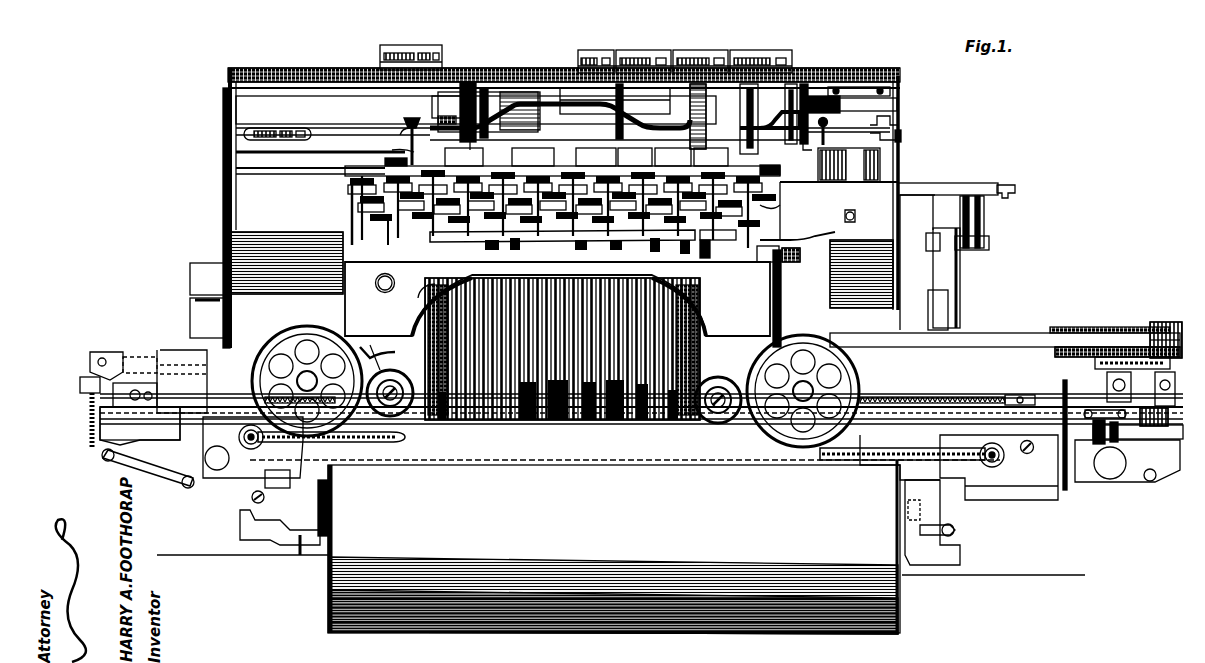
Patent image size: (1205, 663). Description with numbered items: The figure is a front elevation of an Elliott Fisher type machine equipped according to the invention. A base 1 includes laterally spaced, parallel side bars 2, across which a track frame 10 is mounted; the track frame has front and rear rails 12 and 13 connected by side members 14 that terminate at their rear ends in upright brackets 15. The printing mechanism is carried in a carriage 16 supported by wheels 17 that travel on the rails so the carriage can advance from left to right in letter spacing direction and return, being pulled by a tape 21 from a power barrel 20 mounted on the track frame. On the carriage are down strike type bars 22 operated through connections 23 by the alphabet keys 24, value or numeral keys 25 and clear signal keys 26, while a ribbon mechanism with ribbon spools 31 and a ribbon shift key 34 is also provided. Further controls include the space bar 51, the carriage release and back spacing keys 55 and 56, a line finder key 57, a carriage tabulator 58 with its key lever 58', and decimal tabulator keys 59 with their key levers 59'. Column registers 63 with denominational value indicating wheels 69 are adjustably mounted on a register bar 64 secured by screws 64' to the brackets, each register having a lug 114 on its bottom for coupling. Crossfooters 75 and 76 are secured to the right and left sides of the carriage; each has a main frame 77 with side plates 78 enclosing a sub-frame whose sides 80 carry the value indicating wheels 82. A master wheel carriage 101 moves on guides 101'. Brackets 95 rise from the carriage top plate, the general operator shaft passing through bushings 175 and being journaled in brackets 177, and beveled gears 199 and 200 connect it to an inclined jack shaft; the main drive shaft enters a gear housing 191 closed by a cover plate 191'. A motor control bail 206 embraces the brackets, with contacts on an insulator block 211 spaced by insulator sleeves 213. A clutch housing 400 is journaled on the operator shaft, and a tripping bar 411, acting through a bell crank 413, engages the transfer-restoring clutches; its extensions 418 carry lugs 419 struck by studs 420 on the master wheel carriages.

The base 1 is at (910, 578).
The side bars 2 is at (320, 544).
The track frame 10 is at (1049, 498).
The front rail 12 is at (695, 400).
The rear rail 13 is at (966, 402).
The side members 14 is at (196, 478).
The upright brackets 15 is at (962, 276).
The carriage 16 is at (422, 292).
The front and rear wheels 17 is at (373, 344).
The power barrel 20 is at (1084, 336).
The tape 21 is at (1006, 336).
The down strike type bars 22 is at (548, 420).
The connections 23 is at (406, 442).
The alphabet keys 24 is at (462, 232).
The value or numeral keys 25 is at (394, 151).
The clear signal keys 26 is at (386, 162).
The ribbon spools 31 is at (372, 326).
The ribbon shift key 34 is at (388, 226).
The space bar 51 is at (670, 264).
The carriage release key 55 is at (778, 205).
The back spacing key 56 is at (728, 238).
The line finder key 57 is at (394, 283).
The carriage tabulator 58 is at (797, 231).
The key lever 58' is at (767, 296).
The decimal tabulator keys 59 is at (407, 127).
The key levers 59' is at (420, 138).
The column registers 63 is at (380, 56).
The register bar 64 is at (956, 182).
The screws 64' is at (986, 223).
The denominational value indicating wheels 69 is at (412, 52).
The crossfooter 75 is at (882, 240).
The crossfooter 76 is at (223, 213).
The crossfooter main frame 77 is at (902, 277).
The side plates 78 is at (228, 90).
The sub-frame sides 80 is at (880, 176).
The denominational value indicating wheels 82 is at (284, 129).
The brackets 95 is at (484, 85).
The master wheel carriage 101 is at (846, 83).
The guides 101' is at (881, 101).
The lug 114 is at (706, 135).
The bushings 175 is at (462, 60).
The brackets 177 is at (795, 84).
The gear housing 191 is at (263, 257).
The cover plate 191' is at (186, 289).
The beveled gear 199 is at (452, 115).
The beveled gear 200 is at (470, 90).
The motor control bail 206 is at (614, 157).
The insulator block 211 is at (628, 101).
The insulator sleeves 213 is at (673, 157).
The housing 400 is at (760, 84).
The tripping bar 411 is at (533, 157).
The bell crank 413 is at (711, 157).
The extensions 418 is at (900, 140).
The lugs 419 is at (893, 123).
The studs 420 is at (828, 122).